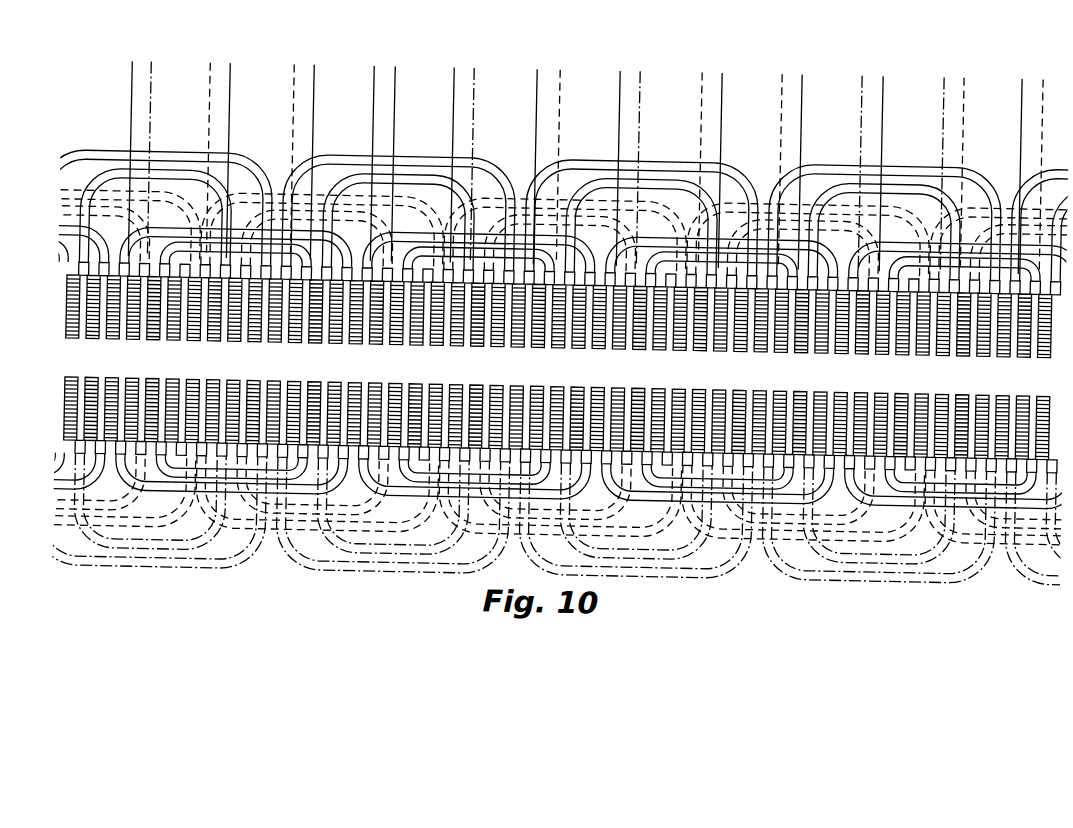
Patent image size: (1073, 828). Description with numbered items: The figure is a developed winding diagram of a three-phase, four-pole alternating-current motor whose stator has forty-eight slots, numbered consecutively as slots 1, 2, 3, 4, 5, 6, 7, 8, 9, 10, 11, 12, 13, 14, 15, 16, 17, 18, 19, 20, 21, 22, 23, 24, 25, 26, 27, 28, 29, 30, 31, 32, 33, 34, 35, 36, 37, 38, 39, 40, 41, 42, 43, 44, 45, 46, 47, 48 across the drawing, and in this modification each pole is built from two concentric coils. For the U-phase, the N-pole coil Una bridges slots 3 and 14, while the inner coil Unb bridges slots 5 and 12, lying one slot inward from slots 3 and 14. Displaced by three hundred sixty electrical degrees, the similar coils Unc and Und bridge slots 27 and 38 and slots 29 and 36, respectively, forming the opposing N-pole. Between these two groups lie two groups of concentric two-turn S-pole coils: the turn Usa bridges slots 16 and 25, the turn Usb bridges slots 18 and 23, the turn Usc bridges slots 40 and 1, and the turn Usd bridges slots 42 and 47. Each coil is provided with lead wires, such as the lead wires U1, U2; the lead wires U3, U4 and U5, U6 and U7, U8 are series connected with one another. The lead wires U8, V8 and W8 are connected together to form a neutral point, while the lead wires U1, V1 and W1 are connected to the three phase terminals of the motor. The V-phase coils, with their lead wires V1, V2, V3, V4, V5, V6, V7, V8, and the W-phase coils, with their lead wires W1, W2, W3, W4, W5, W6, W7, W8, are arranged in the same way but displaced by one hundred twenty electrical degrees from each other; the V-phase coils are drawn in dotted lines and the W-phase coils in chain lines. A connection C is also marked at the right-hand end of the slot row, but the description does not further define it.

The N-pole coil Una is at (212, 485).
The inner coil Unb is at (199, 475).
The N-pole coil Unc is at (744, 487).
The inner coil Und is at (697, 485).
The S-pole coil turn Usa is at (434, 488).
The S-pole coil turn Usb is at (512, 471).
The S-pole coil turn Usc is at (922, 491).
The S-pole coil turn Usd is at (1002, 476).
The coil connection C is at (1047, 444).
The lead wire U1 is at (130, 145).
The lead wire U2 is at (314, 149).
The lead wire U3 is at (535, 153).
The lead wire U4 is at (396, 150).
The lead wire U5 is at (618, 155).
The lead wire U6 is at (802, 158).
The lead wire U7 is at (1020, 163).
The lead wire U8 is at (885, 160).
The lead wire V1 is at (293, 148).
The lead wire V2 is at (477, 152).
The lead wire V3 is at (701, 156).
The lead wire V4 is at (561, 154).
The lead wire V5 is at (781, 158).
The lead wire V6 is at (966, 162).
The lead wire V7 is at (209, 146).
The lead wire V8 is at (1044, 163).
The lead wire W1 is at (452, 152).
The lead wire W2 is at (642, 156).
The lead wire W3 is at (858, 160).
The lead wire W4 is at (724, 158).
The lead wire W5 is at (940, 162).
The lead wire W6 is at (153, 146).
The lead wire W7 is at (373, 151).
The lead wire W8 is at (233, 148).
The slot 1 is at (76, 357).
The slot 2 is at (97, 357).
The slot 3 is at (117, 358).
The slot 4 is at (137, 358).
The slot 5 is at (157, 359).
The slot 6 is at (178, 359).
The slot 7 is at (198, 359).
The slot 8 is at (218, 360).
The slot 9 is at (238, 360).
The slot 10 is at (262, 362).
The slot 11 is at (282, 362).
The slot 12 is at (302, 362).
The slot 13 is at (322, 363).
The slot 14 is at (343, 363).
The slot 15 is at (363, 364).
The slot 16 is at (383, 364).
The slot 17 is at (403, 364).
The slot 18 is at (424, 365).
The slot 19 is at (444, 365).
The slot 20 is at (464, 366).
The slot 21 is at (484, 366).
The slot 22 is at (505, 366).
The slot 23 is at (525, 367).
The slot 24 is at (545, 367).
The slot 25 is at (565, 368).
The slot 26 is at (586, 368).
The slot 27 is at (606, 368).
The slot 28 is at (626, 369).
The slot 29 is at (646, 369).
The slot 30 is at (667, 370).
The slot 31 is at (687, 370).
The slot 32 is at (707, 370).
The slot 33 is at (727, 371).
The slot 34 is at (748, 371).
The slot 35 is at (768, 372).
The slot 36 is at (788, 372).
The slot 37 is at (808, 373).
The slot 38 is at (829, 373).
The slot 39 is at (849, 373).
The slot 40 is at (869, 374).
The slot 41 is at (889, 374).
The slot 42 is at (910, 375).
The slot 43 is at (930, 375).
The slot 44 is at (950, 375).
The slot 45 is at (970, 376).
The slot 46 is at (990, 376).
The slot 47 is at (1011, 377).
The slot 48 is at (1031, 377).